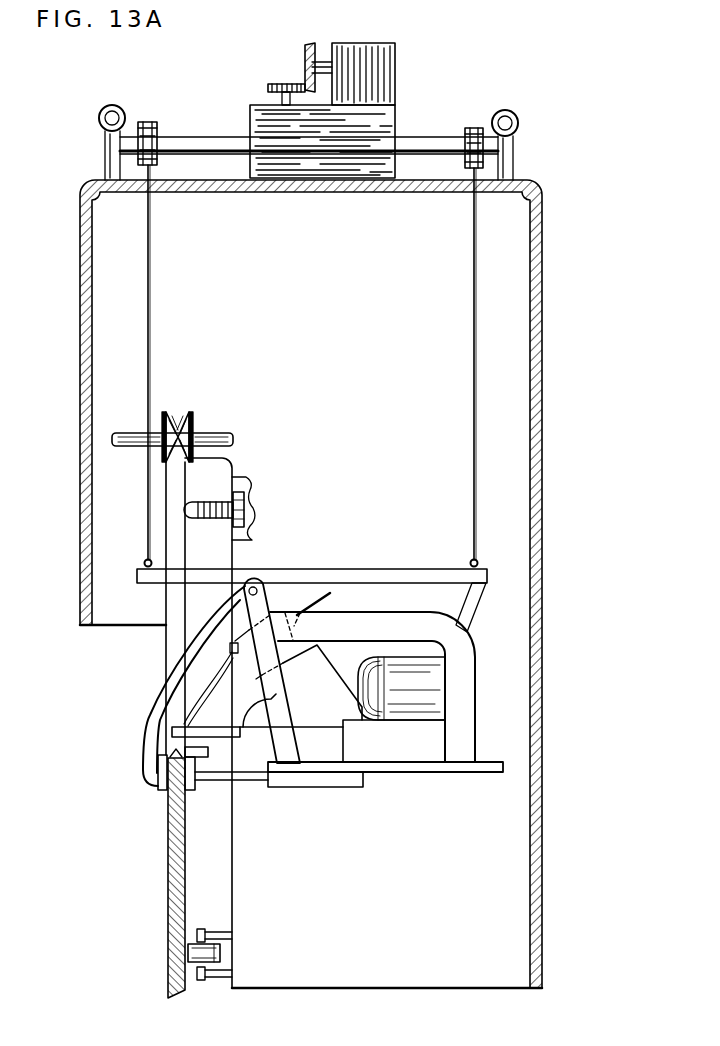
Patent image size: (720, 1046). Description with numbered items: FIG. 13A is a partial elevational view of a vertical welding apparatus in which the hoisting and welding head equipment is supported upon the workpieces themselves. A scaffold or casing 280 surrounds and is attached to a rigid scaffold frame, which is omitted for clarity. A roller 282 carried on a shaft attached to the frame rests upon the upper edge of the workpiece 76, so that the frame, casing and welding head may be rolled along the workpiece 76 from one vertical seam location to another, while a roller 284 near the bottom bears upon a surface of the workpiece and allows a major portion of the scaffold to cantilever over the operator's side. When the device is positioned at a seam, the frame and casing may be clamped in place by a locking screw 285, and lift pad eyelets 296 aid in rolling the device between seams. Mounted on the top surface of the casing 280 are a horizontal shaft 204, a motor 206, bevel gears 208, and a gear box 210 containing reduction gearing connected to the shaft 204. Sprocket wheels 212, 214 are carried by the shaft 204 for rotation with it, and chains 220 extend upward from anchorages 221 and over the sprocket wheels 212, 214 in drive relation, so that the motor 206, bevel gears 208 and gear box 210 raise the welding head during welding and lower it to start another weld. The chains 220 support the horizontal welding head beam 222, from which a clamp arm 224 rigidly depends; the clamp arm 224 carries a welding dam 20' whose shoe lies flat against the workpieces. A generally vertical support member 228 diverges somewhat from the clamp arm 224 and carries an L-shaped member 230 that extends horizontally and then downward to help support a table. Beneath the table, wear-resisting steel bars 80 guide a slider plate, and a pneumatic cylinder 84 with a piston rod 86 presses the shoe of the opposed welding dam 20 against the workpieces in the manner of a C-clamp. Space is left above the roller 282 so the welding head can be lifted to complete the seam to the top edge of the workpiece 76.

The casing 280 is at (542, 315).
The horizontal shaft 204 is at (450, 124).
The lift pad eyelets 296 is at (112, 105).
The sprocket wheel 212 is at (150, 122).
The sprocket wheel 214 is at (466, 130).
The gear box 210 is at (250, 118).
The motor 206 is at (385, 45).
The bevel gears 208 is at (305, 60).
The chains 220 is at (148, 278).
The roller 282 is at (172, 412).
The workpiece 76 is at (180, 541).
The locking screw 285 is at (246, 505).
The anchorages 221 is at (146, 560).
The welding head beam 222 is at (326, 570).
The L-shaped member 230 is at (352, 614).
The support member 228 is at (282, 693).
The clamp arm 224 is at (158, 700).
The welding dam 20' is at (127, 782).
The wear-resisting steel bars 80 is at (175, 908).
The welding dam 20 is at (205, 794).
The piston rod 86 is at (223, 779).
The pneumatic cylinder 84 is at (334, 788).
The roller 284 is at (199, 963).